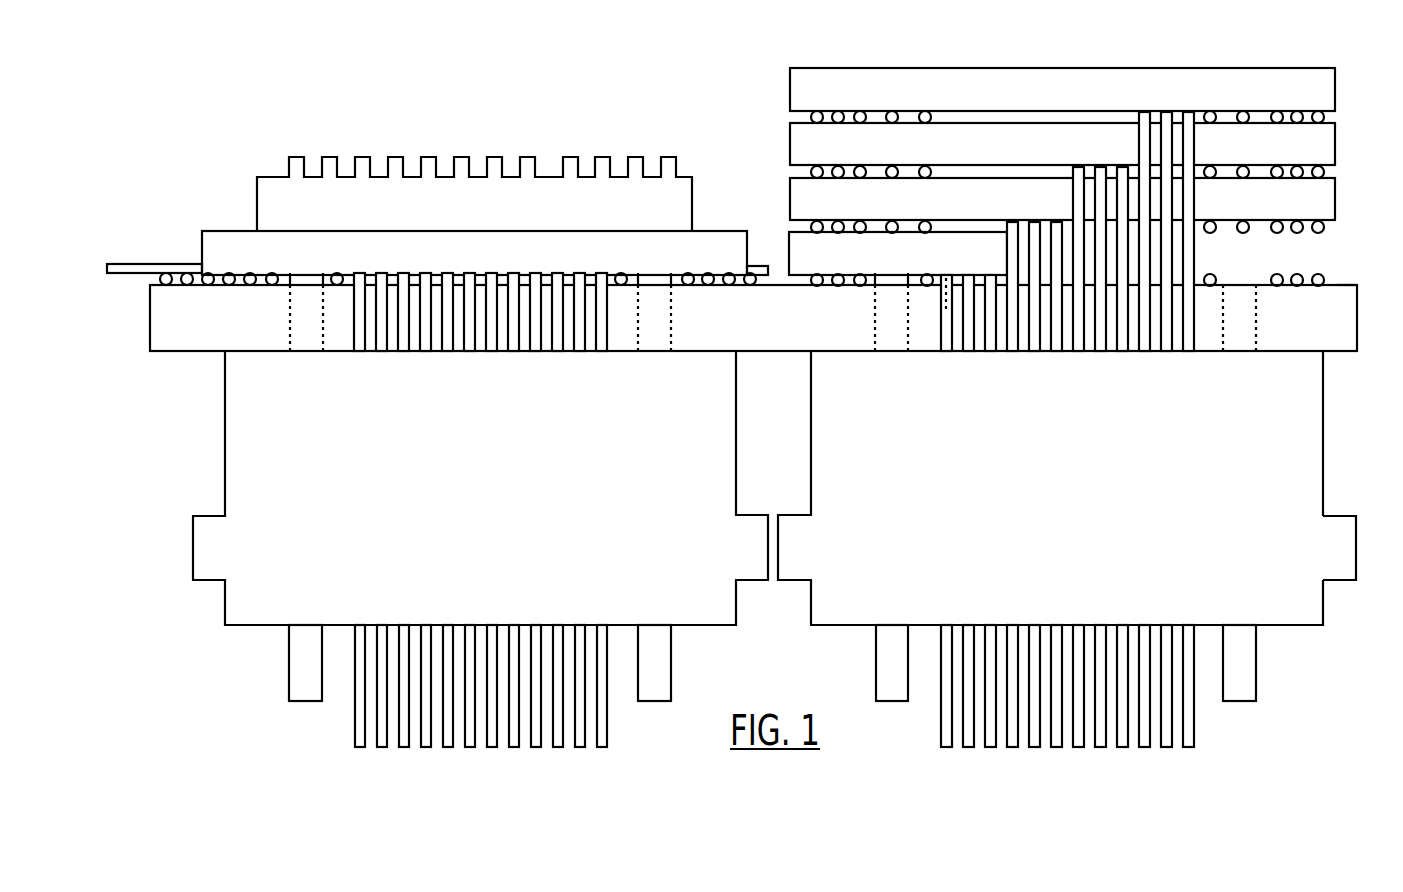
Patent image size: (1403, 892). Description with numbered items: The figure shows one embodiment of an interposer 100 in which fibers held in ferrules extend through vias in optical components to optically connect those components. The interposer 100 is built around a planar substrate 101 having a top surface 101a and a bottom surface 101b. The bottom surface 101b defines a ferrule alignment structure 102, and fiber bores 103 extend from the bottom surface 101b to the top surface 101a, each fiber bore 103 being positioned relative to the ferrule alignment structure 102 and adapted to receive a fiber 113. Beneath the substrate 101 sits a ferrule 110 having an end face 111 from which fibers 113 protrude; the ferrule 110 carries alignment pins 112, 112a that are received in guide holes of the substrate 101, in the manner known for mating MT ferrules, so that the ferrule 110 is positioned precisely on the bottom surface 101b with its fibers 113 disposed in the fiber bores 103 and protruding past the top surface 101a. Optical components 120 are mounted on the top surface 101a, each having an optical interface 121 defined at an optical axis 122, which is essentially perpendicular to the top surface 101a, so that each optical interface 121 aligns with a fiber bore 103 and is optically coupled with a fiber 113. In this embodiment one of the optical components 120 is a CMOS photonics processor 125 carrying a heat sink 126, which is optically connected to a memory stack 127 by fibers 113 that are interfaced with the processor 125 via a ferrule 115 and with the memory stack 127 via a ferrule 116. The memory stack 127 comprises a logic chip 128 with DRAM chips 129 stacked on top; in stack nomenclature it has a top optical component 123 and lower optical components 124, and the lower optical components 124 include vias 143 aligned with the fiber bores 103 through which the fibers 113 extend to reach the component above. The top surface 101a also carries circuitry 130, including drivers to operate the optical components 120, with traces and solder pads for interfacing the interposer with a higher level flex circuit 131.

The interposer 100 is at (1350, 93).
The substrate 101 is at (1348, 342).
The top surface 101a is at (1350, 284).
The bottom surface 101b is at (1333, 353).
The ferrule alignment structure 102 is at (1240, 310).
The fiber bores 103 is at (1195, 330).
The ferrule 110 is at (1306, 458).
The end face 111 is at (838, 350).
The alignment pins 112 is at (880, 284).
The alignment pins 112a is at (888, 651).
The fibers 113 is at (942, 328).
The ferrule 115 is at (223, 498).
The ferrule 116 is at (1306, 493).
The optical component 120 is at (1330, 147).
The optical interface 121 is at (946, 275).
The optical axis 122 is at (950, 292).
The top optical component 123 is at (1310, 100).
The lower optical components 124 is at (787, 245).
The CMOS photonics processor 125 is at (228, 247).
The heat sink 126 is at (268, 185).
The memory stack 127 is at (1286, 60).
The logic chip 128 is at (1310, 264).
The DRAM chips 129 is at (1310, 209).
The circuitry 130 is at (160, 273).
The flex circuit 131 is at (180, 270).
The vias 143 is at (1012, 240).